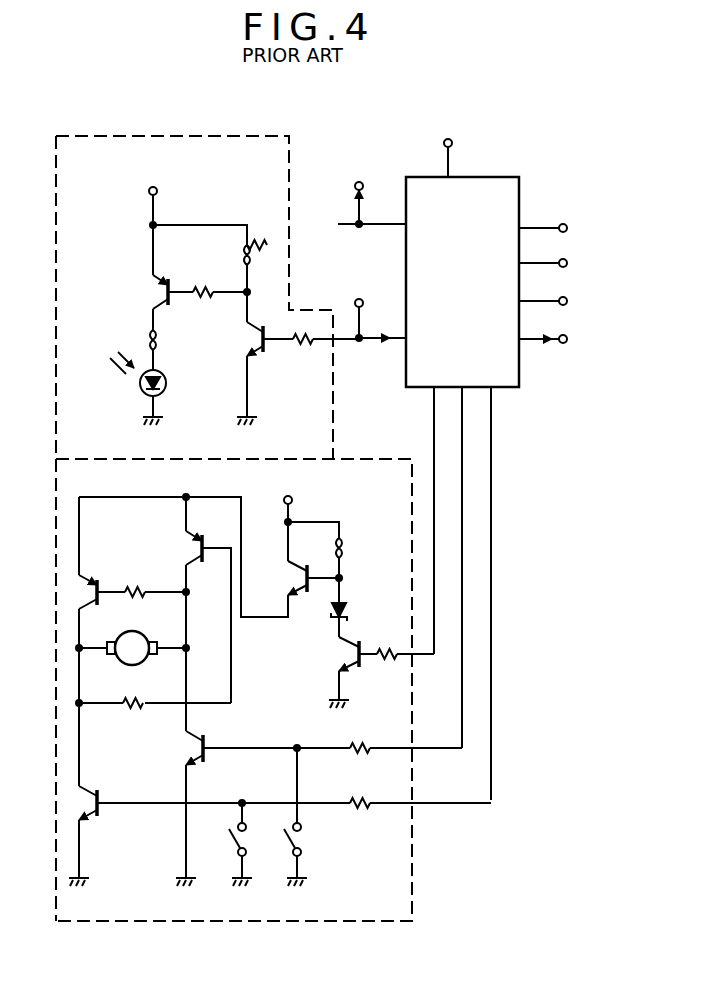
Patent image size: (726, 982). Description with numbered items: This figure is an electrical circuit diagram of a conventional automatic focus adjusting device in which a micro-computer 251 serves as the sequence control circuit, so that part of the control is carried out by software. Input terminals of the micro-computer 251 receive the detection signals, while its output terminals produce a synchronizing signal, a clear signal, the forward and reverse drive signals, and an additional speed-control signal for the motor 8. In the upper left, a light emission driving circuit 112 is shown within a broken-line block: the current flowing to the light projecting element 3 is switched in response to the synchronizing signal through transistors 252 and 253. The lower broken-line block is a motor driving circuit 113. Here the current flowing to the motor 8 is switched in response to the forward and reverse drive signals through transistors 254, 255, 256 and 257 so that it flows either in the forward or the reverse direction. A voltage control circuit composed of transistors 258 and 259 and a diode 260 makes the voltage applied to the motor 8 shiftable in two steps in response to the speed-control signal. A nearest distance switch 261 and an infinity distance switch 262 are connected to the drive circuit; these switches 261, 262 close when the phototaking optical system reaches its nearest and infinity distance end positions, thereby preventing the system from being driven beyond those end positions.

The light emission driving circuit 112 is at (254, 136).
The motor driving circuit 113 is at (378, 459).
The micro-computer 251 is at (490, 177).
The transistor 252 is at (160, 296).
The transistor 253 is at (256, 343).
The light projecting element 3 is at (168, 382).
The transistor 254 is at (196, 550).
The transistor 255 is at (97, 580).
The transistor 256 is at (197, 752).
The transistor 257 is at (97, 790).
The transistor 258 is at (300, 580).
The transistor 259 is at (350, 658).
The diode 260 is at (350, 608).
The nearest distance switch 261 is at (246, 840).
The infinity distance switch 262 is at (302, 839).
The motor 8 is at (144, 632).